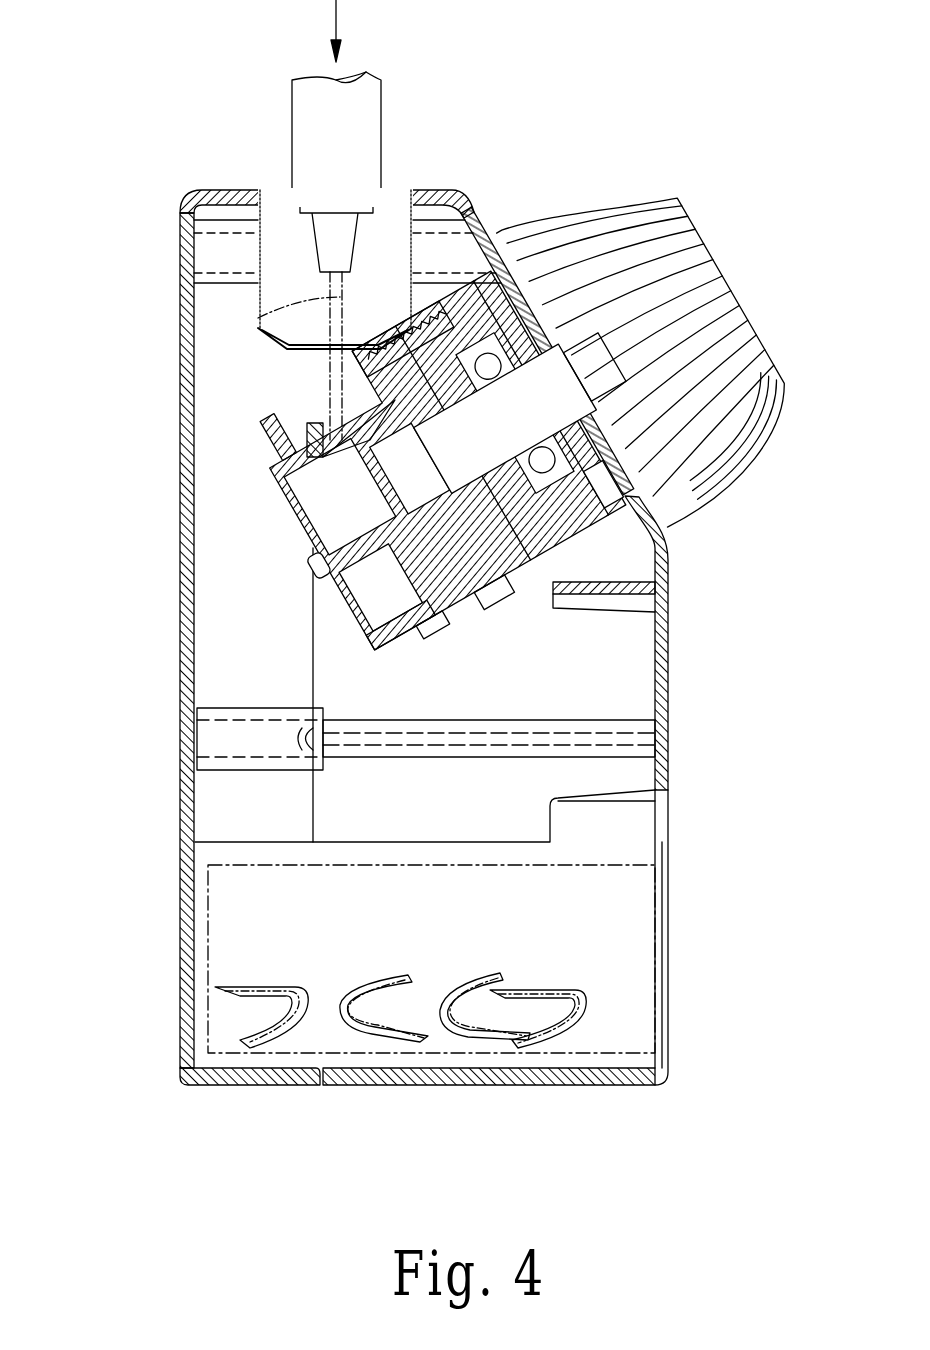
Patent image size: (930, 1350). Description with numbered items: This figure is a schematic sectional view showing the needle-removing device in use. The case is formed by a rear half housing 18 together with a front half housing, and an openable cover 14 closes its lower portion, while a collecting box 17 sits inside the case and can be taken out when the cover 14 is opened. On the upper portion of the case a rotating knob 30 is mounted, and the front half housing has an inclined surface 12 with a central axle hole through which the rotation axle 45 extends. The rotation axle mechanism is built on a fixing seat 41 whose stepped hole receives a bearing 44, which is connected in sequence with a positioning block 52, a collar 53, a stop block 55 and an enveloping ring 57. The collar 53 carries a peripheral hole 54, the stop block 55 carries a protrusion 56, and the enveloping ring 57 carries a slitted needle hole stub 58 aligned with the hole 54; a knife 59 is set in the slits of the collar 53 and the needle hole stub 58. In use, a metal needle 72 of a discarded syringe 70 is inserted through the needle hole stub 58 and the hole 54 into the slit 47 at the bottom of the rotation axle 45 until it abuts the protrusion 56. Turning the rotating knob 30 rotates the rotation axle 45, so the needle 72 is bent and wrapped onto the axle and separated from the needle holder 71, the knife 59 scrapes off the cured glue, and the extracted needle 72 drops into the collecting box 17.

The inclined surface 12 is at (680, 468).
The openable cover 14 is at (665, 728).
The collecting box 17 is at (660, 945).
The rear half housing 18 is at (180, 800).
The rotating knob 30 is at (720, 290).
The fixing seat 41 is at (462, 290).
The bearing 44 is at (600, 482).
The rotation axle 45 is at (565, 380).
The slit 47 is at (325, 508).
The positioning block 52 is at (600, 500).
The collar 53 is at (560, 595).
The hole 54 is at (500, 600).
The stop block 55 is at (432, 622).
The protrusion 56 is at (320, 560).
The enveloping ring 57 is at (390, 640).
The needle hole stub 58 is at (330, 465).
The knife 59 is at (385, 418).
The discarded syringe 70 is at (315, 128).
The needle holder 71 is at (328, 236).
The metal needle 72 is at (258, 318).